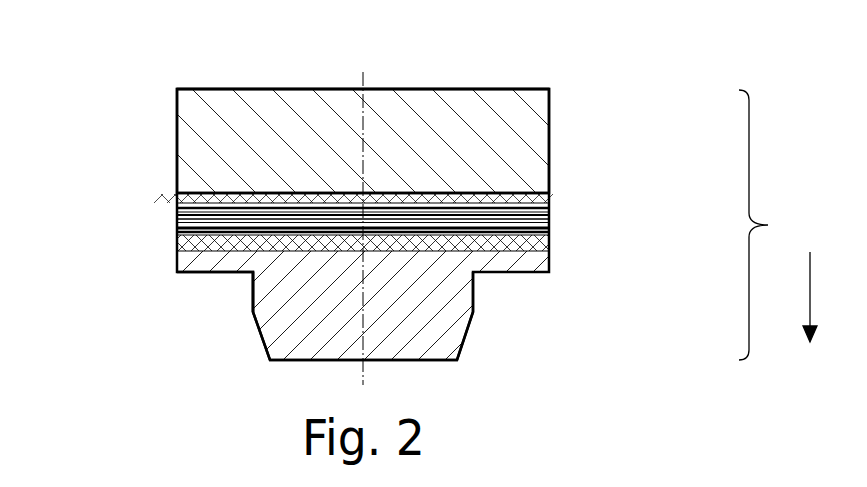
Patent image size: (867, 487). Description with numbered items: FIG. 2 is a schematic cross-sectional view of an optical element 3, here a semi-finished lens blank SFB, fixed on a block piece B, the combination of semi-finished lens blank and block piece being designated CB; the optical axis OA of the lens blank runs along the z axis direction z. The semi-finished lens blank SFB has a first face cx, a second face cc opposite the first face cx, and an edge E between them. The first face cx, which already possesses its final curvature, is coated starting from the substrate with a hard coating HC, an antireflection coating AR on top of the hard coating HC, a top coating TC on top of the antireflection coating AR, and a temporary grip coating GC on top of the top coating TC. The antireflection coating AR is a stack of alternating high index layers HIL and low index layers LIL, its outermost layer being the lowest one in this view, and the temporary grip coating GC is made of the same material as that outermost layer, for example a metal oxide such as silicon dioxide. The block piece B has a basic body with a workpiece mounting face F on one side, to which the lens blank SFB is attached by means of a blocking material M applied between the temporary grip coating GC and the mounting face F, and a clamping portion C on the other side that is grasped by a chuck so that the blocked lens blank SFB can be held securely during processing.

The optical element 3 is at (422, 113).
The optical axis OA is at (363, 108).
The second face cc is at (198, 89).
The semi-finished lens blank SFB is at (537, 135).
The edge E is at (550, 168).
The first face cx is at (532, 197).
The hard coating HC is at (190, 200).
The low index layer LIL is at (177, 208).
The high index layer HIL is at (550, 210).
The antireflection coating AR is at (448, 241).
The top coating TC is at (190, 232).
The temporary grip coating GC is at (550, 234).
The blocking material M is at (190, 245).
The workpiece mounting face F is at (500, 254).
The clamping portion C is at (260, 338).
The block piece B is at (226, 286).
The combination of semi-finished lens blank and block piece CB is at (775, 225).
The z axis direction z is at (802, 297).